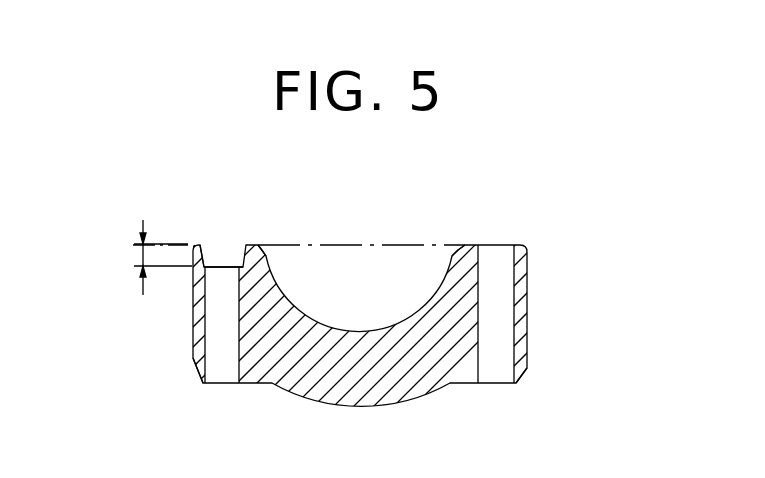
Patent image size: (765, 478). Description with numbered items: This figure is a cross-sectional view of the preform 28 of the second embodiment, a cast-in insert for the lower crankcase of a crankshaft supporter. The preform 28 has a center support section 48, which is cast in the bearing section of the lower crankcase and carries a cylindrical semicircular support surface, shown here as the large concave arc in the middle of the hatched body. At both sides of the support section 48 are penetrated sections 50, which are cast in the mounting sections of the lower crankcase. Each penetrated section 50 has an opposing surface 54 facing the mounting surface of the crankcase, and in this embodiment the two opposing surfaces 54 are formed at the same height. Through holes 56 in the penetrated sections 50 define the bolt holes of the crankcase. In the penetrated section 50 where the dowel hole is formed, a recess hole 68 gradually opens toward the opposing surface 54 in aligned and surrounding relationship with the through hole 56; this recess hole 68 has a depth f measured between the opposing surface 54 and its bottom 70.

The preform 28 is at (553, 263).
The center support section 48 is at (408, 380).
The penetrated section 50 is at (205, 327).
The opposing surface 54 is at (253, 245).
The through hole 56 is at (206, 383).
The recess hole 68 is at (207, 256).
The bottom 70 is at (224, 264).
The depth f is at (143, 253).